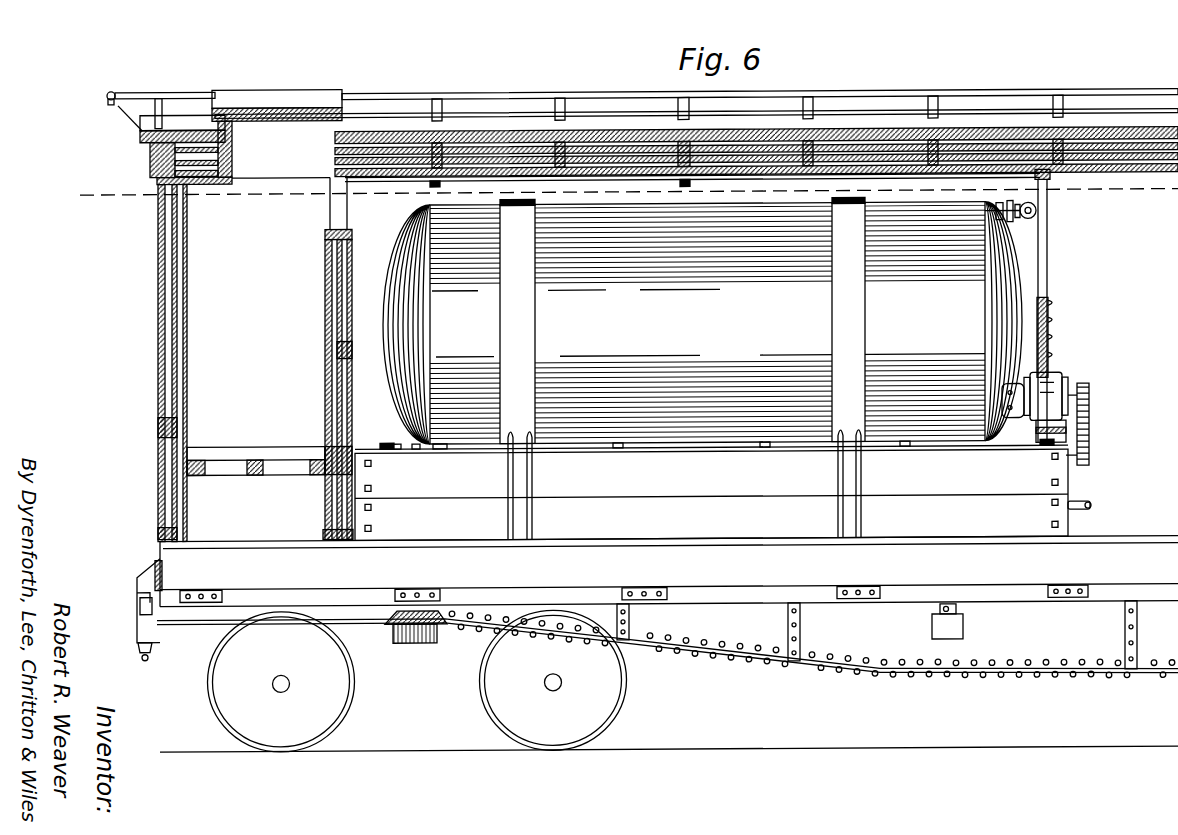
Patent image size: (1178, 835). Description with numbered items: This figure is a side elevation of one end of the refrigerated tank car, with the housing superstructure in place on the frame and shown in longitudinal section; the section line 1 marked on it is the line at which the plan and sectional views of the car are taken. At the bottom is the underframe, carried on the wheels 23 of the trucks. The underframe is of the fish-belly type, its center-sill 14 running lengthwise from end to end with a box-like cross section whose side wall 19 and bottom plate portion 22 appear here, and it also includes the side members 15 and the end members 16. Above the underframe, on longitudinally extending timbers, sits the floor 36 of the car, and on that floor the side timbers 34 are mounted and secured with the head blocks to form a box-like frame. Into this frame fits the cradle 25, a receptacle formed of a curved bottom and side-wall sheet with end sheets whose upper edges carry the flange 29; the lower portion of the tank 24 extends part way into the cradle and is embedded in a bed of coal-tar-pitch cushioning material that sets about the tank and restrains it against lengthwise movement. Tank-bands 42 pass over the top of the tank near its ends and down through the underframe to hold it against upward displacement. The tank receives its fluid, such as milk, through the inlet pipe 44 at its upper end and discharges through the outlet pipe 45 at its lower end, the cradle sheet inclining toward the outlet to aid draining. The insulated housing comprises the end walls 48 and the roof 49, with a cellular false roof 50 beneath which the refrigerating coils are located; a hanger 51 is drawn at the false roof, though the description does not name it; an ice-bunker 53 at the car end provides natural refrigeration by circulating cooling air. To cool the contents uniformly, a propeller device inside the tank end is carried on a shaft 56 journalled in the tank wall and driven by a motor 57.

The section line 1 is at (77, 180).
The center-sill 14 is at (1020, 641).
The side members 15 is at (746, 601).
The end members 16 is at (152, 557).
The side wall of center-sill 19 is at (1037, 652).
The bottom plate portion of center-sill 22 is at (1073, 680).
The wheels 23 is at (330, 691).
The tank 24 is at (702, 322).
The cradle 25 is at (744, 450).
The flange 29 is at (383, 447).
The side timbers 34 is at (711, 494).
The floor 36 is at (1138, 537).
The tank-bands 42 is at (682, 320).
The inlet pipe 44 is at (1048, 214).
The outlet pipe 45 is at (1086, 505).
The end walls 48 is at (155, 378).
The roof 49 is at (588, 126).
The false roof 50 is at (613, 181).
The rod hanger 51 is at (736, 181).
The ice-bunker 53 is at (246, 327).
The shaft 56 is at (1081, 462).
The motor 57 is at (1058, 390).